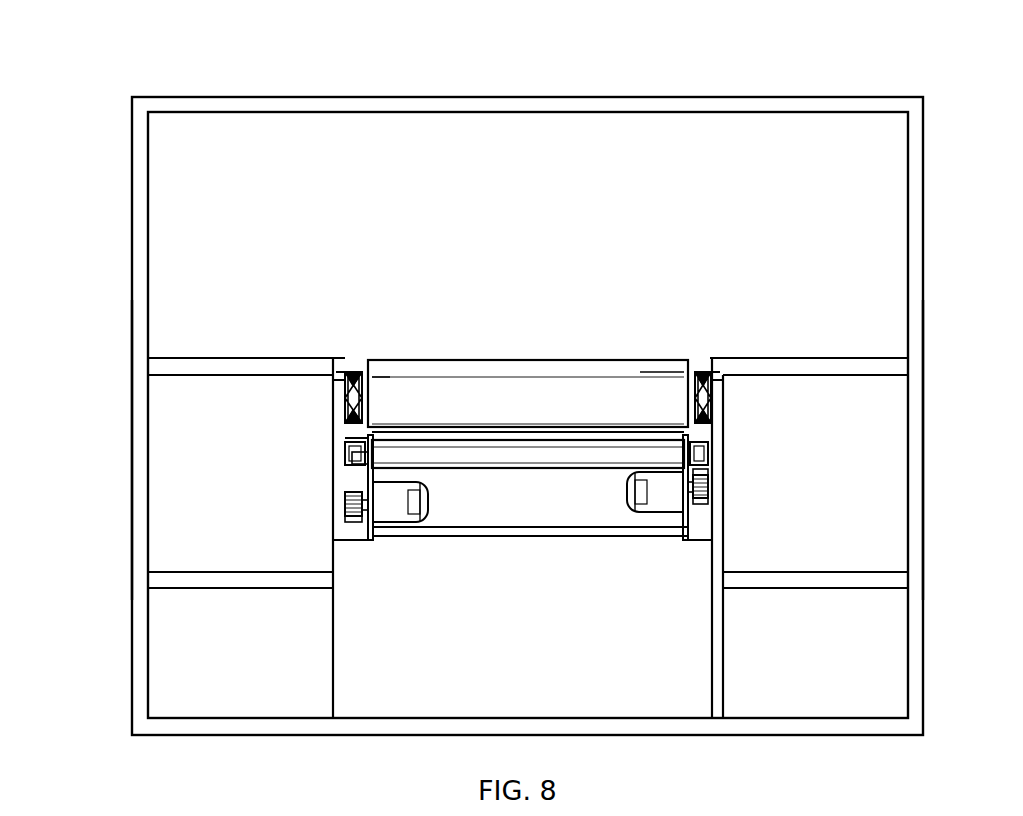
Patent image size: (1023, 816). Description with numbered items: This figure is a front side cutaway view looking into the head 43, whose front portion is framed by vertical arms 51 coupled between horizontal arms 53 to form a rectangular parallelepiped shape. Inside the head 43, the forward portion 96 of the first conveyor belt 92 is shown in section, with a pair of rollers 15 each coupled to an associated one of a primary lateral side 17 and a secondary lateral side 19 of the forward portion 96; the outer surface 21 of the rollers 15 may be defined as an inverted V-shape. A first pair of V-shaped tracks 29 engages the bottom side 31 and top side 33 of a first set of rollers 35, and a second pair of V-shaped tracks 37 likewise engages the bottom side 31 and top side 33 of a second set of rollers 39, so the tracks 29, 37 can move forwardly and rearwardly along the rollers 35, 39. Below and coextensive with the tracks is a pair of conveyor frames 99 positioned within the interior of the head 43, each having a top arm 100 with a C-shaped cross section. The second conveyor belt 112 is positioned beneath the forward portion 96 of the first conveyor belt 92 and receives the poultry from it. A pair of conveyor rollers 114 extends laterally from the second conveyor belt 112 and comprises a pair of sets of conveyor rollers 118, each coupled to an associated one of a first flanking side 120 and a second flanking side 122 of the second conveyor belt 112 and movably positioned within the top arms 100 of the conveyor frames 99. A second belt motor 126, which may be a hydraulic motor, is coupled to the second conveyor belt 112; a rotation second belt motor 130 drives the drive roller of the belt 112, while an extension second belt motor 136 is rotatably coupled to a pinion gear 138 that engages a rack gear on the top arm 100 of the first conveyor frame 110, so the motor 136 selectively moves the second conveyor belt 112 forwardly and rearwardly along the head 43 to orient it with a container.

The head 43 is at (557, 90).
The horizontal arms of the front portion of the head 53 is at (363, 103).
The vertical arms of the front portion of the head 51 is at (132, 455).
The forward portion of the first conveyor belt 96 is at (592, 362).
The first conveyor belt 92 is at (562, 356).
The second pair of V-shaped tracks 37 is at (364, 372).
The first pair of V-shaped tracks 29 is at (699, 370).
The second conveyor belt 112 is at (520, 470).
The first one of the pair of conveyor frames 110 is at (705, 528).
The top arm of the conveyor frame 100 is at (348, 455).
The second flanking side of the second conveyor belt 122 is at (348, 463).
The top side of the rollers 33 is at (345, 440).
The second set of rollers 39 is at (340, 400).
The first set of rollers 35 is at (725, 412).
The pair of conveyor rollers 114 is at (342, 482).
The pair of sets of conveyor rollers 118 is at (345, 502).
The first flanking side of the second conveyor belt 120 is at (712, 450).
The second belt motor 126 is at (395, 528).
The rotation second belt motor 130 is at (412, 518).
The extension second belt motor 136 is at (636, 508).
The pinion gear 138 is at (690, 528).
The pair of conveyor frames 99 is at (345, 538).
The bottom side of the rollers 31 is at (345, 385).
The secondary lateral side of the forward portion of the first conveyor belt 19 is at (350, 372).
The pair of rollers 15 is at (383, 377).
The primary lateral side of the forward portion of the first conveyor belt 17 is at (713, 365).
The outer surface of the pair of rollers 21 is at (340, 390).